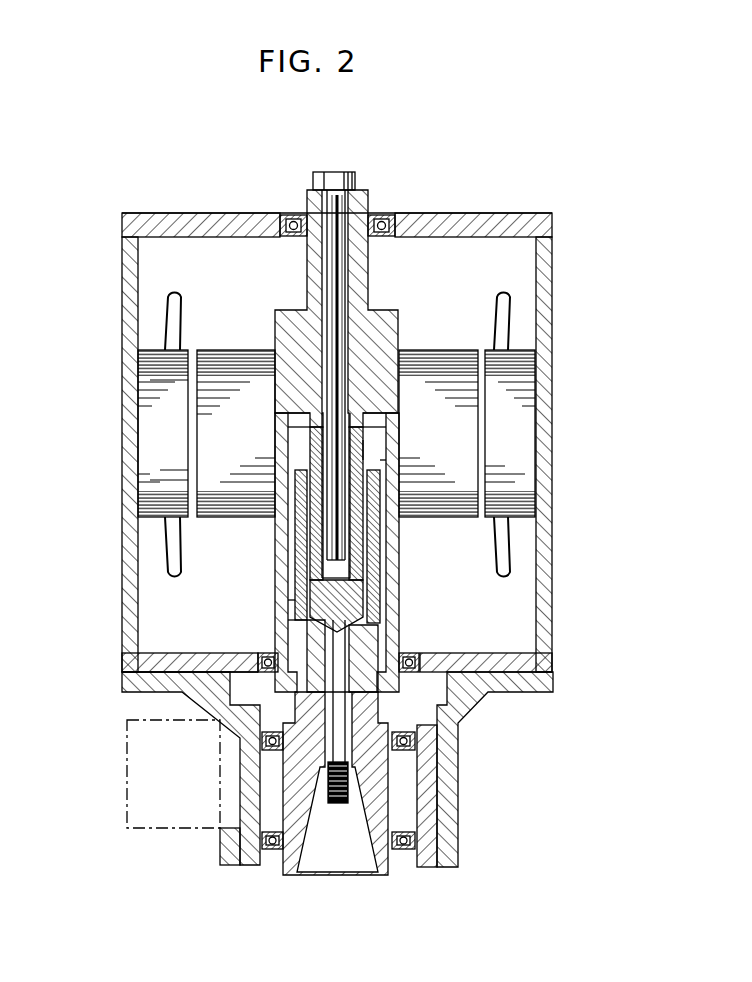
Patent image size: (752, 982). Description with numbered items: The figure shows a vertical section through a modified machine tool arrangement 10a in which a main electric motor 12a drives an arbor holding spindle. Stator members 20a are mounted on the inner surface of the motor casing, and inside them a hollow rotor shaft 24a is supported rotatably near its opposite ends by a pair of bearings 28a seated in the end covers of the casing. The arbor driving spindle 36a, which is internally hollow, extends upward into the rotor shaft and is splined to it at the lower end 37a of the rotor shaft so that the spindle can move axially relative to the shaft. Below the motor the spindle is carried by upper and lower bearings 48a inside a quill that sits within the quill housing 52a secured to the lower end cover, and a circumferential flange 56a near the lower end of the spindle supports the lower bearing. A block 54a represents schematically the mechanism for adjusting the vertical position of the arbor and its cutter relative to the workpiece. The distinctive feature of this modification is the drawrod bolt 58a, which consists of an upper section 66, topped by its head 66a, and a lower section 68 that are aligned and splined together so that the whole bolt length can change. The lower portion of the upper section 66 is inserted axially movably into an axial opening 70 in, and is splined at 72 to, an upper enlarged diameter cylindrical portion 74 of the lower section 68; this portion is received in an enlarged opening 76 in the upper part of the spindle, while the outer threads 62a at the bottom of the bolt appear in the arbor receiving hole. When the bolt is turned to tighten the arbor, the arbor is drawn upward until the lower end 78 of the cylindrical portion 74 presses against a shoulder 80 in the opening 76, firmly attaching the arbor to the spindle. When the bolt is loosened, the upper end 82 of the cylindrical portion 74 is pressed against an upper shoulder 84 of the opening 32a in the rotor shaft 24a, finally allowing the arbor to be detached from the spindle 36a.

The machine tool arrangement 10a is at (118, 497).
The main electric motor 12a is at (202, 213).
The stator members 20a is at (140, 393).
The rotor shaft 24a is at (277, 325).
The bearings 28a is at (294, 214).
The enlarged internal diameter cavity 32a is at (352, 440).
The arbor driving spindle 36a is at (298, 878).
The lower end of rotor shaft 37a is at (280, 641).
The upper and lower bearings 48a is at (264, 738).
The quill housing 52a is at (228, 866).
The adjusting mechanism 54a is at (148, 832).
The circumferential flange 56a is at (400, 874).
The drawrod bolt 58a is at (340, 350).
The outer threads 62a is at (337, 805).
The upper section of bolt 66 is at (340, 295).
The head of upper bolt section 66a is at (348, 186).
The lower section of bolt 68 is at (370, 512).
The axial opening 70 is at (345, 562).
The spline 72 is at (352, 447).
The upper enlarged diameter cylindrical portion 74 is at (388, 470).
The enlarged opening 76 is at (300, 490).
The lower end of cylindrical portion 78 is at (365, 621).
The shoulder 80 is at (296, 612).
The upper end of cylindrical portion 82 is at (362, 421).
The upper shoulder 84 is at (300, 412).